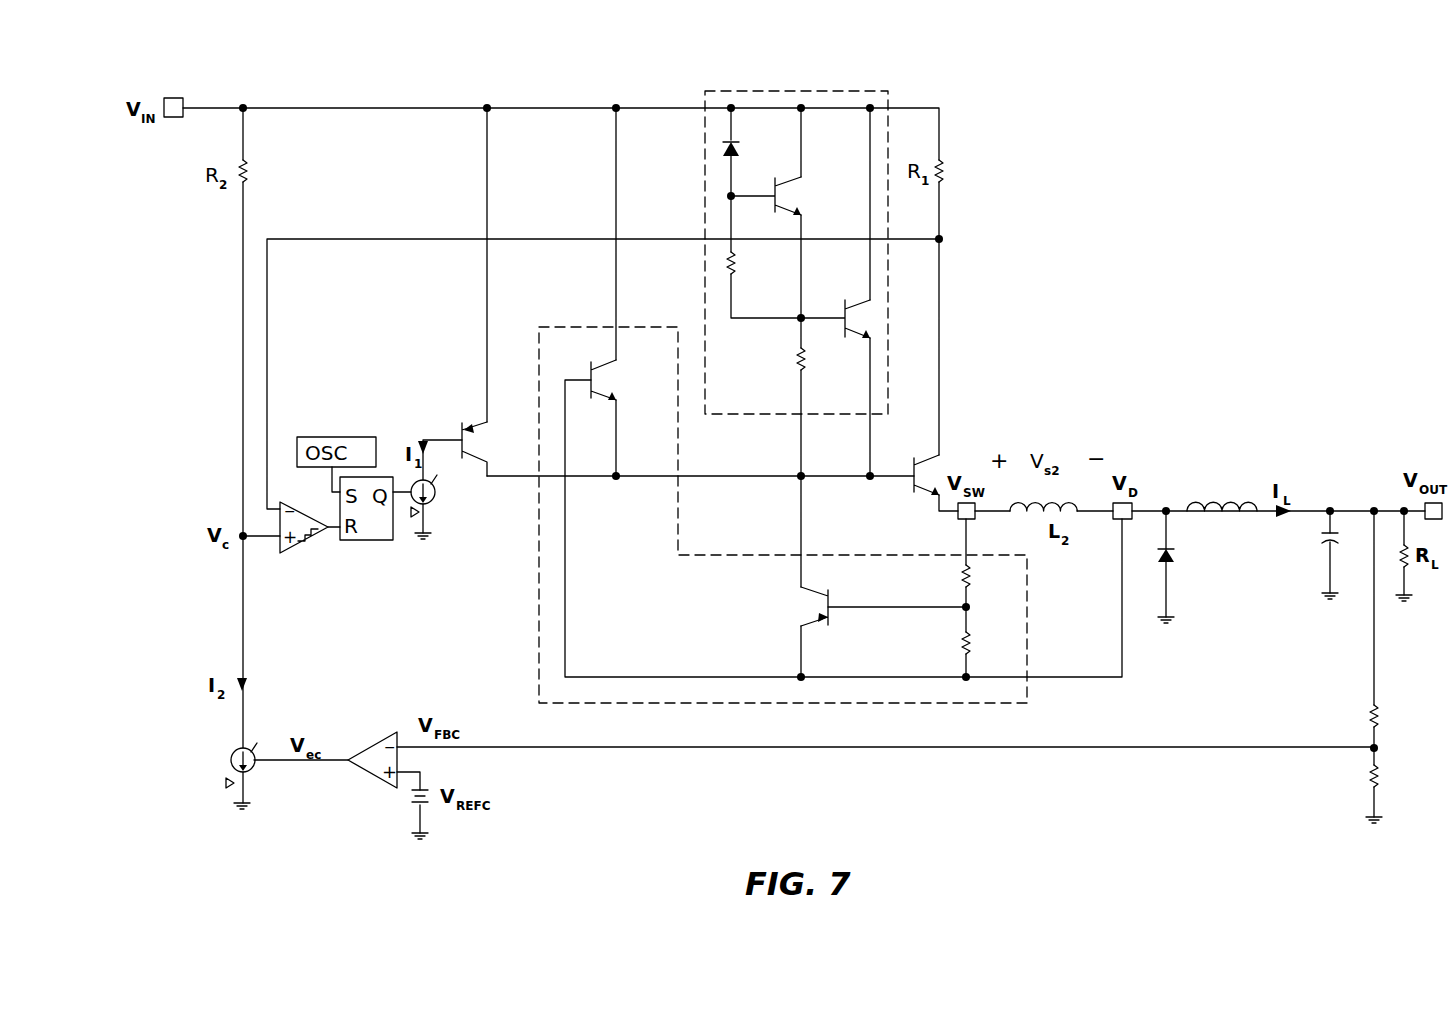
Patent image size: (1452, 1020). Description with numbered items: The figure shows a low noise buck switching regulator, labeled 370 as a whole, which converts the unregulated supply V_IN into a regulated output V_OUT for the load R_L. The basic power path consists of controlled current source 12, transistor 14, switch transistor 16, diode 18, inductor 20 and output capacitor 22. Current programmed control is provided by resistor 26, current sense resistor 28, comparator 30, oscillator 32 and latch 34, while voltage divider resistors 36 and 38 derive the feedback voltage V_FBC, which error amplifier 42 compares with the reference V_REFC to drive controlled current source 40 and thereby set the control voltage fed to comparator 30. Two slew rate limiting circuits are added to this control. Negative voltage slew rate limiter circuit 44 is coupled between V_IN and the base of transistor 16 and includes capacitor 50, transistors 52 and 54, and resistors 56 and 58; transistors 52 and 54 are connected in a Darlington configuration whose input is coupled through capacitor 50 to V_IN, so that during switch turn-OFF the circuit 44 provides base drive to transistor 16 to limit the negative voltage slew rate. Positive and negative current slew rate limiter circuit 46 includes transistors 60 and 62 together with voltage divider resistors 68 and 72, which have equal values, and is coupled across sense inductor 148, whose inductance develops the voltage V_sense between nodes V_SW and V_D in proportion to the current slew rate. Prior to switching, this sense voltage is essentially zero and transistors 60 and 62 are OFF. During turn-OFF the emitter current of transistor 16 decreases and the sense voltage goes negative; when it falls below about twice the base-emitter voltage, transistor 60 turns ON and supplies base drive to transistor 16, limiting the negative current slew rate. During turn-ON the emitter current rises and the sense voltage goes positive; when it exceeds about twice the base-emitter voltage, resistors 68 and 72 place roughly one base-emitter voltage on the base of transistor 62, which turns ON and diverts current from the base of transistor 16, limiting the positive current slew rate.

The controlled current source 12 is at (432, 502).
The transistor 14 is at (478, 418).
The transistor 16 is at (925, 490).
The diode 18 is at (1175, 556).
The inductor 20 is at (1223, 498).
The capacitor 22 is at (1323, 539).
The resistor 26 is at (248, 171).
The current sense resistor 28 is at (945, 172).
The comparator 30 is at (306, 541).
The oscillator 32 is at (338, 437).
The latch 34 is at (393, 540).
The voltage divider resistor 36 is at (1381, 716).
The voltage divider resistor 38 is at (1382, 775).
The controlled current source 40 is at (228, 760).
The error amplifier 42 is at (372, 745).
The negative voltage slew rate limiter circuit 44 is at (888, 91).
The positive and negative current slew rate limiter circuit 46 is at (1027, 703).
The capacitor 50 is at (740, 150).
The transistor 52 is at (792, 180).
The transistor 54 is at (860, 300).
The resistor 56 is at (740, 263).
The resistor 58 is at (795, 359).
The transistor 60 is at (618, 372).
The transistor 62 is at (812, 622).
The voltage divider resistor 68 is at (975, 574).
The voltage divider resistor 72 is at (977, 640).
The sense inductor 148 is at (1040, 496).
The switching regulator circuit 370 is at (1197, 95).